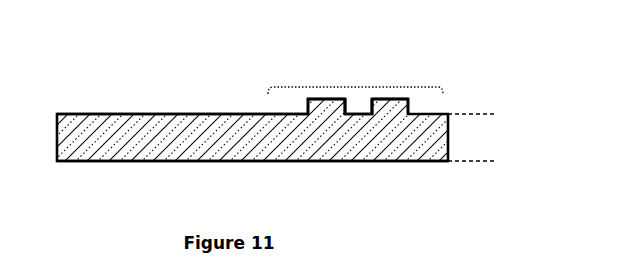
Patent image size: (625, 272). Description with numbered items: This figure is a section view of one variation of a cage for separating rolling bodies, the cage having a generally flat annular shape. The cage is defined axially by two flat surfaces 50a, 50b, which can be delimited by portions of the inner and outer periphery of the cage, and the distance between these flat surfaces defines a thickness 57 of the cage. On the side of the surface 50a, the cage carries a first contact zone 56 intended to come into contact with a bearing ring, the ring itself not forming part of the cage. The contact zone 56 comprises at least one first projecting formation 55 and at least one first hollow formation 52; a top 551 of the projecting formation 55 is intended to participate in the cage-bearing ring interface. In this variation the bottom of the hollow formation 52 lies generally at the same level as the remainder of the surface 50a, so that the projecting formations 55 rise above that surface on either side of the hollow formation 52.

The flat surface 50a is at (114, 107).
The flat surface 50b is at (114, 168).
The first projecting formation 55 is at (320, 104).
The top of the first projecting formation 551 is at (323, 92).
The first contact zone 56 is at (356, 86).
The first hollow formation 52 is at (359, 108).
The thickness of the cage 57 is at (491, 120).